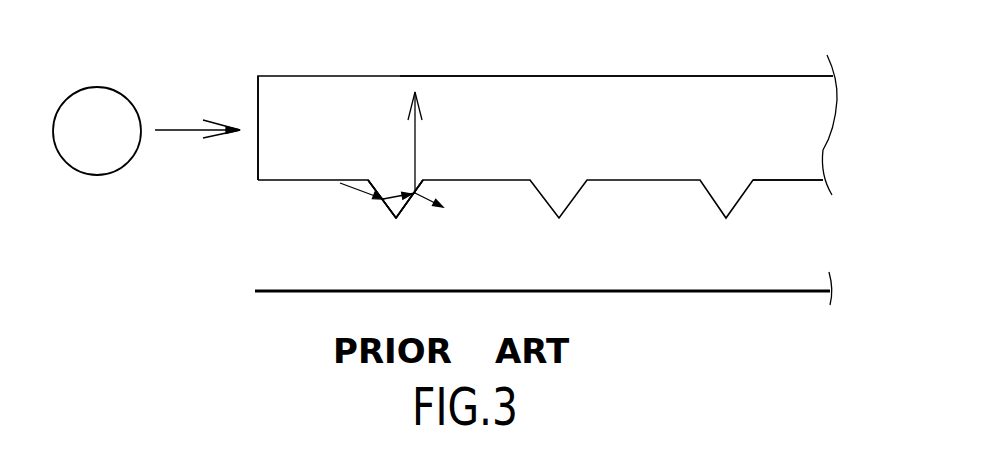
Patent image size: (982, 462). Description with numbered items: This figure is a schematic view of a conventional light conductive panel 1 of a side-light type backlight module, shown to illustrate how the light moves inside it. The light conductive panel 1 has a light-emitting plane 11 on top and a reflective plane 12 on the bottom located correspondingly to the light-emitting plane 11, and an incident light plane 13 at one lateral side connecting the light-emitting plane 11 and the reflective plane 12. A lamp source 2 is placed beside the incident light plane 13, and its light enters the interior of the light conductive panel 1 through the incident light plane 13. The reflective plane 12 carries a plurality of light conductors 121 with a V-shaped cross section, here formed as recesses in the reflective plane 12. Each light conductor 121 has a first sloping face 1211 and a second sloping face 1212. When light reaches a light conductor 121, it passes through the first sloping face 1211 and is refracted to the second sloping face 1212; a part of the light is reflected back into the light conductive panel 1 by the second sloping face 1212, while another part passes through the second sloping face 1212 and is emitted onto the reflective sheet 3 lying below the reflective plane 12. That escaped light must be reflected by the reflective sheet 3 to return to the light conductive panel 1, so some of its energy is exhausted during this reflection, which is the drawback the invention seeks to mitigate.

The light conductive panel 1 is at (803, 47).
The light-emitting plane 11 is at (689, 75).
The reflective plane 12 is at (787, 180).
The incident light plane 13 is at (257, 137).
The light conductor 121 is at (410, 215).
The first sloping face 1211 is at (386, 210).
The second sloping face 1212 is at (413, 203).
The lamp source 2 is at (118, 115).
The reflective sheet 3 is at (742, 292).